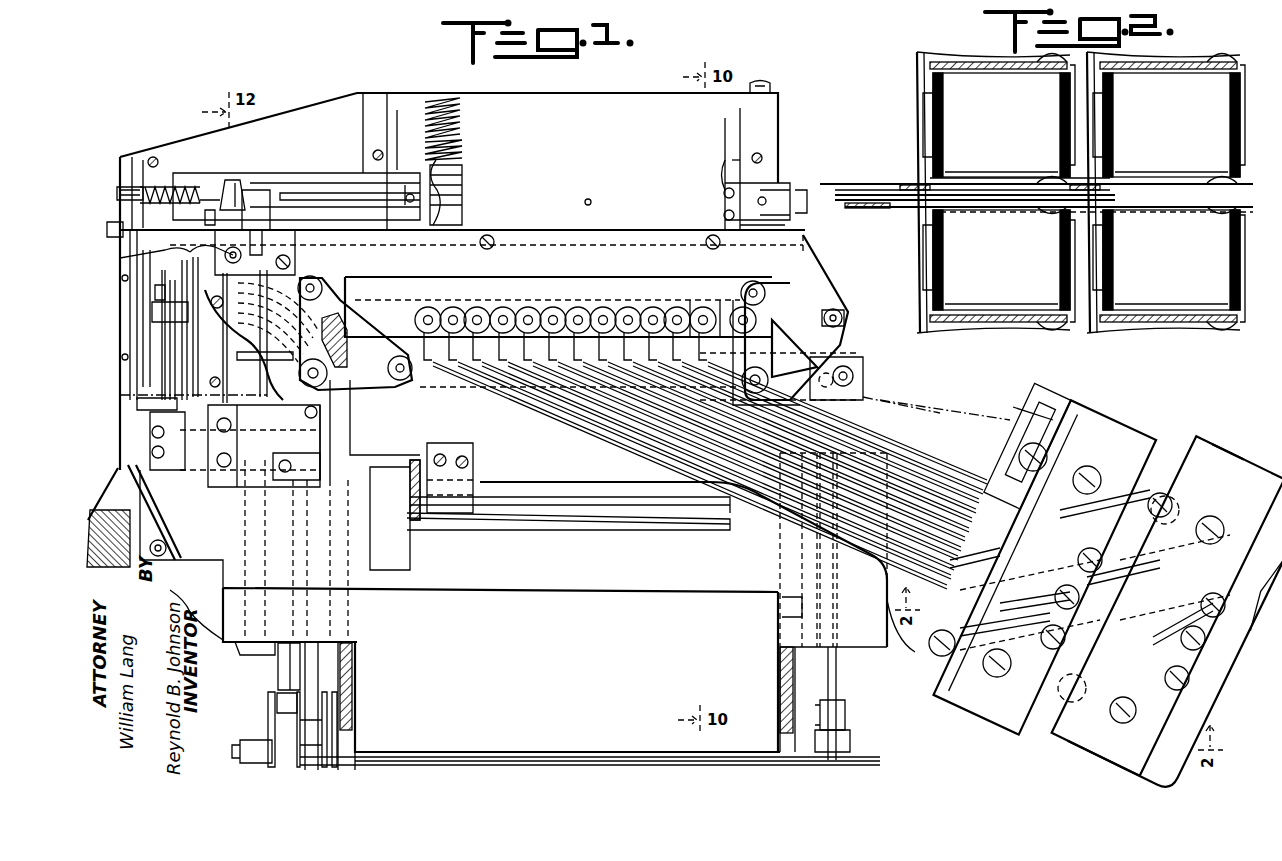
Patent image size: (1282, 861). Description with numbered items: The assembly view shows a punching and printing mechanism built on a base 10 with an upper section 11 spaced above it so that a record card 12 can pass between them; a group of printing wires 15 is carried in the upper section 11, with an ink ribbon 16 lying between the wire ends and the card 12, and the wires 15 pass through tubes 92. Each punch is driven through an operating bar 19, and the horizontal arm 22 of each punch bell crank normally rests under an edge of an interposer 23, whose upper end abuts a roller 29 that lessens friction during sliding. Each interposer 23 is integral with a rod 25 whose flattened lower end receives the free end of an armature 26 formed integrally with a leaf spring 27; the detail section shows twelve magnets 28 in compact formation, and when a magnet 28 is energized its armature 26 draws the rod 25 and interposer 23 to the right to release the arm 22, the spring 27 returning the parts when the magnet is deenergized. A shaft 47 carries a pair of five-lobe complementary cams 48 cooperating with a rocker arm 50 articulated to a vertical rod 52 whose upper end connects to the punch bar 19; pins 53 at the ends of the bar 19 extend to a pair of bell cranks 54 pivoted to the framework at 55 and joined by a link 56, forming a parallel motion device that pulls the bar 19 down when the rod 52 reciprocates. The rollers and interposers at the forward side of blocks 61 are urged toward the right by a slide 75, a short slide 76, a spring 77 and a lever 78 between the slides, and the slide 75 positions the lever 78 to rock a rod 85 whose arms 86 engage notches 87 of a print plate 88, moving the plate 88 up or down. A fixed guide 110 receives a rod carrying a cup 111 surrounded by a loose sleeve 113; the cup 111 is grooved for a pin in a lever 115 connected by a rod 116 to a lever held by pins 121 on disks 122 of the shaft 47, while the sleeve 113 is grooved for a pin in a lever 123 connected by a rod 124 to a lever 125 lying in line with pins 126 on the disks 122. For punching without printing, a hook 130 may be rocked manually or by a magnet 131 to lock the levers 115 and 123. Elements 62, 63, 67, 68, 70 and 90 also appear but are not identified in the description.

In FIG. 1, the base 10 is at (518, 592).
In FIG. 1, the upper section 11 is at (603, 513).
In FIG. 1, the record card 12 is at (608, 520).
In FIG. 1, the wires 15 is at (410, 487).
In FIG. 1, the ink ribbon 16 is at (407, 517).
In FIG. 1, the operating bar 19 is at (863, 362).
In FIG. 1, the horizontal arm 22 is at (520, 370).
In FIG. 1, the interposer 23 is at (465, 308).
In FIG. 1, the rod 25 is at (960, 470).
In FIG. 2, the rod 25 is at (852, 183).
In FIG. 1, the armature 26 is at (992, 475).
In FIG. 2, the armature 26 is at (918, 125).
In FIG. 1, the leaf spring 27 is at (1108, 595).
In FIG. 2, the leaf spring 27 is at (935, 58).
In FIG. 2, the magnet 28 is at (1086, 191).
In FIG. 1, the rollers 29 is at (700, 310).
In FIG. 1, the shaft 47 is at (495, 758).
In FIG. 1, the five-lobe complementary cams 48 is at (845, 745).
In FIG. 1, the rocker arm 50 is at (848, 705).
In FIG. 1, the vertical rod 52 is at (838, 668).
In FIG. 1, the pins 53 is at (405, 380).
In FIG. 1, the bell cranks 54 is at (793, 320).
In FIG. 1, the pivot 55 is at (318, 385).
In FIG. 1, the link 56 is at (548, 290).
In FIG. 1, the blocks 61 is at (440, 176).
In FIG. 1, the spring 62 is at (465, 150).
In FIG. 1, the spring 63 is at (470, 128).
In FIG. 1, the housing 67 is at (622, 105).
In FIG. 1, the bracket 68 is at (765, 200).
In FIG. 1, the cam 70 is at (438, 205).
In FIG. 1, the slide 75 is at (285, 172).
In FIG. 1, the short slide 76 is at (230, 180).
In FIG. 1, the spring 77 is at (165, 187).
In FIG. 1, the lever 78 is at (258, 190).
In FIG. 1, the rod 85 is at (238, 252).
In FIG. 1, the arms 86 is at (290, 262).
In FIG. 1, the notches 87 is at (145, 250).
In FIG. 1, the plate 88 is at (175, 338).
In FIG. 1, the link 90 is at (208, 210).
In FIG. 1, the tubes 92 is at (262, 355).
In FIG. 1, the fixed guide 110 is at (137, 404).
In FIG. 1, the cup 111 is at (150, 433).
In FIG. 1, the sleeve 113 is at (125, 470).
In FIG. 1, the lever 115 is at (245, 412).
In FIG. 1, the rod 116 is at (352, 652).
In FIG. 1, the pins 121 is at (310, 745).
In FIG. 1, the disks 122 is at (290, 757).
In FIG. 1, the lever 123 is at (285, 466).
In FIG. 1, the rod 124 is at (282, 670).
In FIG. 1, the lever 125 is at (300, 700).
In FIG. 1, the pins 126 is at (270, 700).
In FIG. 1, the hook 130 is at (180, 515).
In FIG. 1, the magnet 131 is at (112, 549).